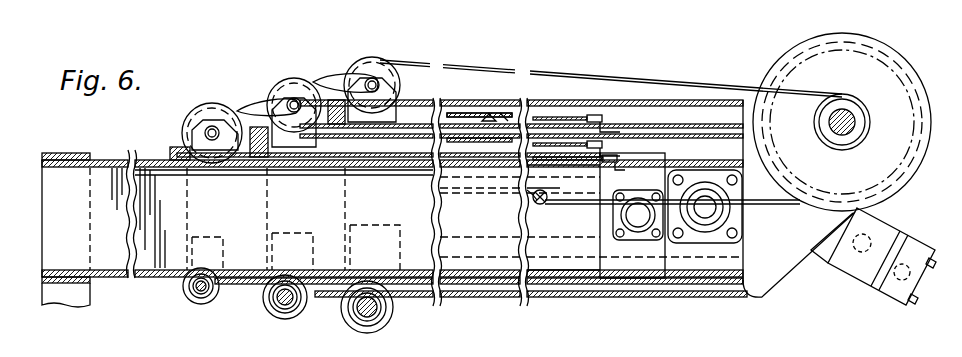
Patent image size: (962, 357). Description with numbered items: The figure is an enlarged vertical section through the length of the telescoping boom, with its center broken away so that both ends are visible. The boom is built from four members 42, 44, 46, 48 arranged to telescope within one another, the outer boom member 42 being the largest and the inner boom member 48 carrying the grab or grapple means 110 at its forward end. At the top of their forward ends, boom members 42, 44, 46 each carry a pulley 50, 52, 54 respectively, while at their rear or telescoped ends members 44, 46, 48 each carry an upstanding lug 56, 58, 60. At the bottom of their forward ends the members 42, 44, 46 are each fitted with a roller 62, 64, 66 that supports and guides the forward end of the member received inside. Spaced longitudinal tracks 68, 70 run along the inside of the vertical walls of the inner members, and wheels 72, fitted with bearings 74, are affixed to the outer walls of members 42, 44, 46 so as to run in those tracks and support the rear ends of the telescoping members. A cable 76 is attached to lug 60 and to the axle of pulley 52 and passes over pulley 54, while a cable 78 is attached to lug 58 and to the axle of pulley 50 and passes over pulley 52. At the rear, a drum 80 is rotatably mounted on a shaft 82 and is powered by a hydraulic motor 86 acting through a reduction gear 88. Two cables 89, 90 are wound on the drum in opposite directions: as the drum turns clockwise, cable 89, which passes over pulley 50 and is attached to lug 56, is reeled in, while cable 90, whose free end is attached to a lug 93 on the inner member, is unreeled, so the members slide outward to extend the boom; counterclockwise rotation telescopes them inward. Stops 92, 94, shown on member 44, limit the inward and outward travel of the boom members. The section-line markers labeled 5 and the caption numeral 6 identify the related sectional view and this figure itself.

The outer boom member 42 is at (540, 100).
The boom member 44 is at (360, 168).
The boom member 46 is at (318, 168).
The boom member 48 is at (135, 160).
The pulley 50 is at (375, 58).
The pulley 52 is at (296, 78).
The pulley 54 is at (216, 104).
The upstanding lug 56 is at (604, 116).
The upstanding lug 58 is at (605, 143).
The upstanding lug 60 is at (614, 159).
The roller 62 is at (393, 317).
The roller 64 is at (272, 317).
The roller 66 is at (195, 305).
The track 68 is at (717, 166).
The track 70 is at (665, 302).
The wheel 72 is at (624, 239).
The bearing 74 is at (574, 212).
The cable 76 is at (252, 170).
The cable 78 is at (392, 168).
The drum 80 is at (904, 64).
The shaft 82 is at (866, 122).
The hydraulic motor 86 is at (910, 235).
The reduction gear 88 is at (812, 260).
The cable 89 is at (438, 63).
The cable 90 is at (793, 205).
The stop 92 is at (500, 112).
The lug 93 is at (525, 188).
The stop 94 is at (173, 148).
The grab or grapple means 110 is at (104, 293).
The bottom rail 6 is at (395, 268).
The section line 5 is at (735, 50).